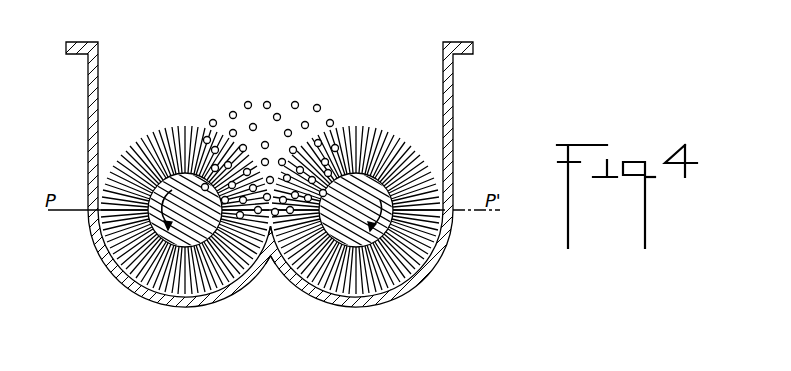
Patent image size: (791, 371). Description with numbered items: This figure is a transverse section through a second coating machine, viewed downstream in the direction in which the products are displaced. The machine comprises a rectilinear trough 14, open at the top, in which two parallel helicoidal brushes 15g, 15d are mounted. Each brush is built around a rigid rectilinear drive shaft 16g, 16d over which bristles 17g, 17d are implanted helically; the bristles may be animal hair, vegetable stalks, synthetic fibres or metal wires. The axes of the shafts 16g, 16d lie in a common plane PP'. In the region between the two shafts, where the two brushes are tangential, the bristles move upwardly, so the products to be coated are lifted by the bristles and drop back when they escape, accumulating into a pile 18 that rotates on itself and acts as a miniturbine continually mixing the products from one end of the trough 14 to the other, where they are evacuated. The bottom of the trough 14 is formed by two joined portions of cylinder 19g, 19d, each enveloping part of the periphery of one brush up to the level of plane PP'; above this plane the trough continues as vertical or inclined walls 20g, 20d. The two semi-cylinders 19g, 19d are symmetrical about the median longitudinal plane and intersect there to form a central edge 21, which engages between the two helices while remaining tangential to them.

The trough 14 is at (456, 238).
The helicoidal brush 15g is at (148, 134).
The helicoidal brush 15d is at (405, 142).
The drive shaft 16g is at (188, 190).
The drive shaft 16d is at (360, 183).
The bristles 17g is at (167, 278).
The bristles 17d is at (397, 268).
The pile 18 is at (278, 112).
The portion of cylinder 19g is at (198, 308).
The portion of cylinder 19d is at (370, 307).
The wall 20g is at (89, 115).
The wall 20d is at (452, 104).
The central edge 21 is at (271, 257).